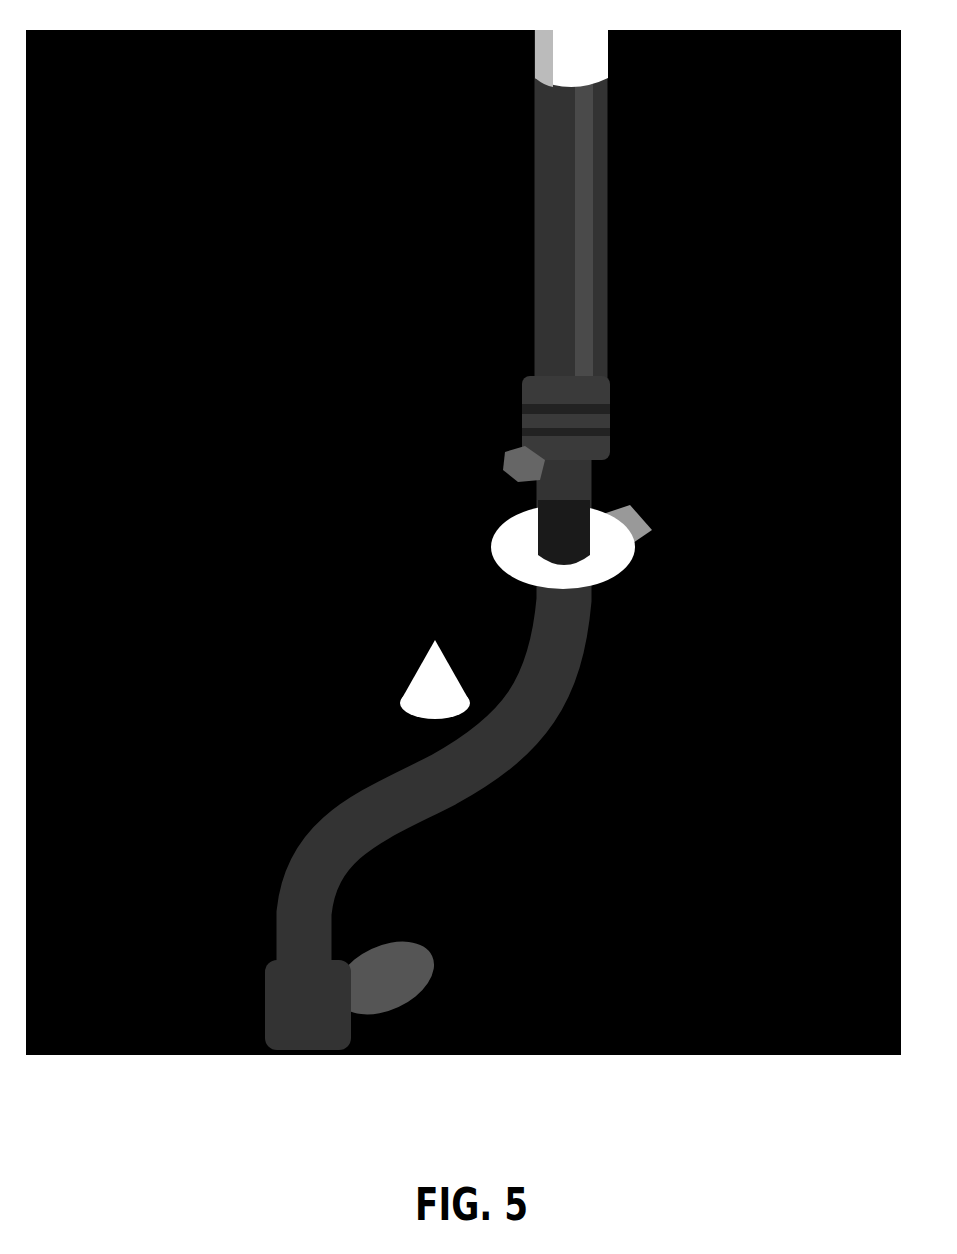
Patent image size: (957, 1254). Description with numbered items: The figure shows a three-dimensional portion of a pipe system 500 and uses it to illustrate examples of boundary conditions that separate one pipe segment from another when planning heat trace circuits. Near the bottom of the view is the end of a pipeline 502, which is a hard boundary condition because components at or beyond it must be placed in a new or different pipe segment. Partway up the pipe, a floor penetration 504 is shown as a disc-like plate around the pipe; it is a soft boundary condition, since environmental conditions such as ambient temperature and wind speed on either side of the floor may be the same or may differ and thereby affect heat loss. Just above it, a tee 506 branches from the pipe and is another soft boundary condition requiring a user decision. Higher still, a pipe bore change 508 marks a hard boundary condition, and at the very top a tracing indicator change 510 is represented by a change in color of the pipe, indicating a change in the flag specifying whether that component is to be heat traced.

The pipe system 500 is at (728, 104).
The end of a pipeline 502 is at (268, 1000).
The floor penetration 504 is at (490, 553).
The tee 506 is at (500, 460).
The pipe bore change 508 is at (520, 398).
The tracing indicator change 510 is at (533, 77).